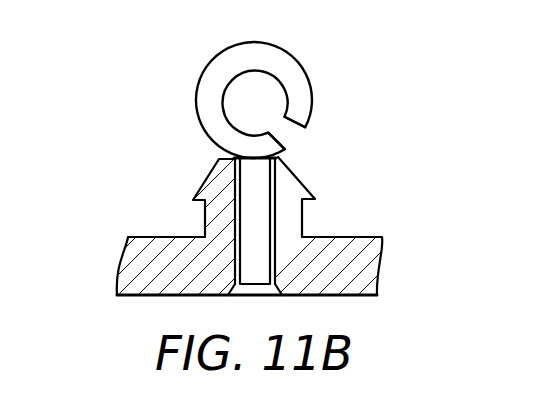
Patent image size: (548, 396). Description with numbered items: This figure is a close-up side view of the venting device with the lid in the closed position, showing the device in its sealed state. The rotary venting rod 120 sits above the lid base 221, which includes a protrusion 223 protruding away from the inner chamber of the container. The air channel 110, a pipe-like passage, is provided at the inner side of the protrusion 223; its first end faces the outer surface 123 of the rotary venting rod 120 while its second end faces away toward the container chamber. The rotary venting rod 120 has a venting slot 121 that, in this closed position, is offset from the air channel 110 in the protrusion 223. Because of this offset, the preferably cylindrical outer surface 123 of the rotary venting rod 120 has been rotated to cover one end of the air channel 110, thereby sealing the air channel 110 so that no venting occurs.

The air channel 110 is at (247, 230).
The rotary venting rod 120 is at (260, 94).
The venting slot 121 is at (287, 132).
The outer surface 123 is at (208, 62).
The lid base 221 is at (353, 259).
The protrusion 223 is at (293, 222).